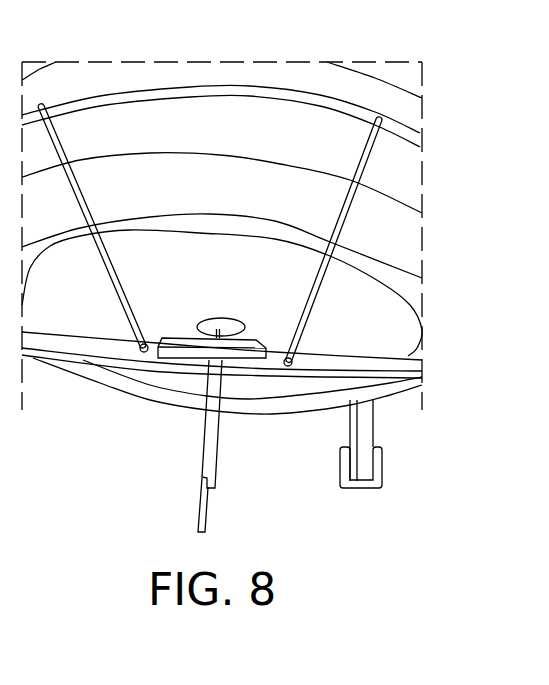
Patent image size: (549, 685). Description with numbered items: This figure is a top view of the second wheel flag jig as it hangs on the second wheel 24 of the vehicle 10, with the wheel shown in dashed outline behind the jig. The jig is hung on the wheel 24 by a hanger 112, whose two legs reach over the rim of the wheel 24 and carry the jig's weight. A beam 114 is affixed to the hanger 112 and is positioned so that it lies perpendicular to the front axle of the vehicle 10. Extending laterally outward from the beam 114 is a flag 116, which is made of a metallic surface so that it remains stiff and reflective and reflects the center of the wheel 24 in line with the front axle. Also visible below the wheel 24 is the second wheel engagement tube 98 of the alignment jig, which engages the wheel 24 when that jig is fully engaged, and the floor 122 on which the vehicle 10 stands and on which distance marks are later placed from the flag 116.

The vehicle 10 is at (439, 78).
The second wheel 24 is at (208, 148).
The hanger 112 is at (61, 137).
The beam 114 is at (385, 367).
The flag 116 is at (222, 446).
The second wheel engagement tube 98 is at (363, 441).
The floor 122 is at (396, 497).